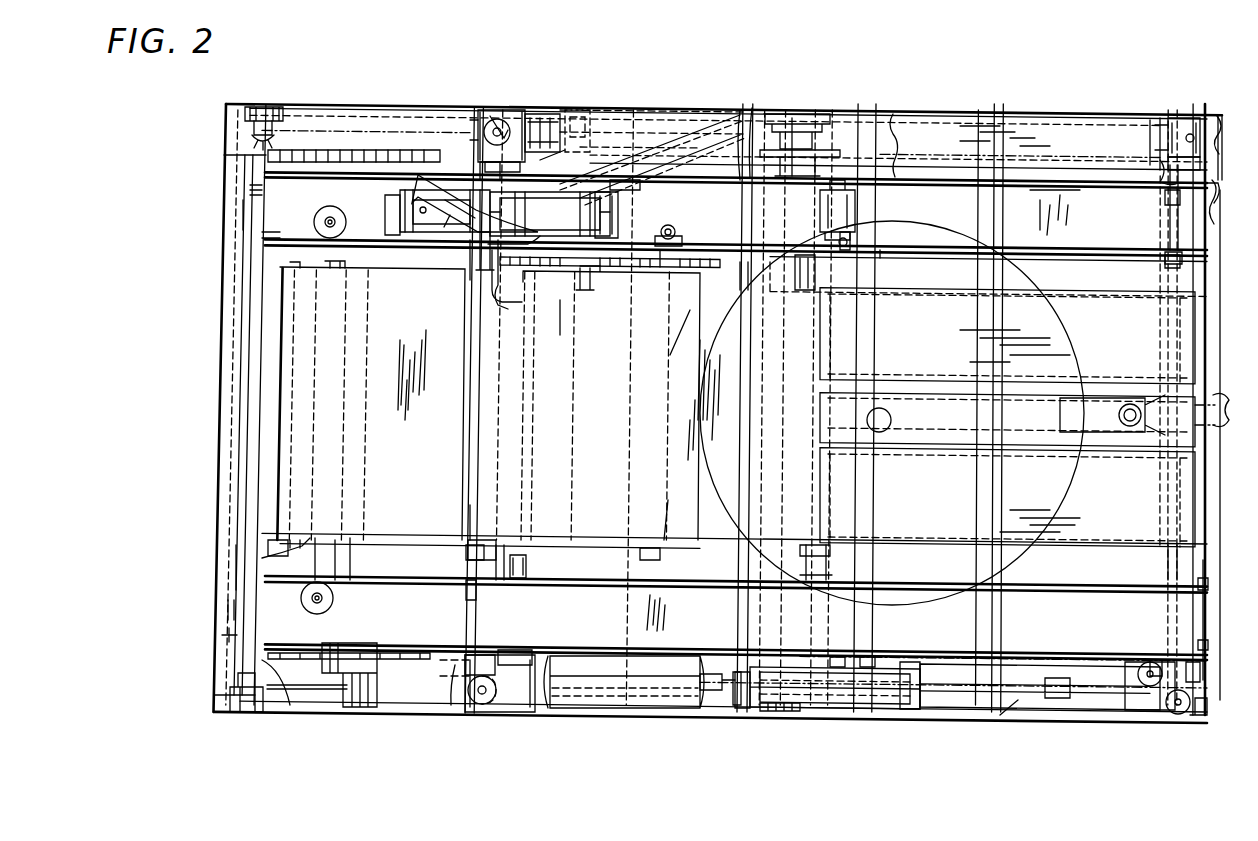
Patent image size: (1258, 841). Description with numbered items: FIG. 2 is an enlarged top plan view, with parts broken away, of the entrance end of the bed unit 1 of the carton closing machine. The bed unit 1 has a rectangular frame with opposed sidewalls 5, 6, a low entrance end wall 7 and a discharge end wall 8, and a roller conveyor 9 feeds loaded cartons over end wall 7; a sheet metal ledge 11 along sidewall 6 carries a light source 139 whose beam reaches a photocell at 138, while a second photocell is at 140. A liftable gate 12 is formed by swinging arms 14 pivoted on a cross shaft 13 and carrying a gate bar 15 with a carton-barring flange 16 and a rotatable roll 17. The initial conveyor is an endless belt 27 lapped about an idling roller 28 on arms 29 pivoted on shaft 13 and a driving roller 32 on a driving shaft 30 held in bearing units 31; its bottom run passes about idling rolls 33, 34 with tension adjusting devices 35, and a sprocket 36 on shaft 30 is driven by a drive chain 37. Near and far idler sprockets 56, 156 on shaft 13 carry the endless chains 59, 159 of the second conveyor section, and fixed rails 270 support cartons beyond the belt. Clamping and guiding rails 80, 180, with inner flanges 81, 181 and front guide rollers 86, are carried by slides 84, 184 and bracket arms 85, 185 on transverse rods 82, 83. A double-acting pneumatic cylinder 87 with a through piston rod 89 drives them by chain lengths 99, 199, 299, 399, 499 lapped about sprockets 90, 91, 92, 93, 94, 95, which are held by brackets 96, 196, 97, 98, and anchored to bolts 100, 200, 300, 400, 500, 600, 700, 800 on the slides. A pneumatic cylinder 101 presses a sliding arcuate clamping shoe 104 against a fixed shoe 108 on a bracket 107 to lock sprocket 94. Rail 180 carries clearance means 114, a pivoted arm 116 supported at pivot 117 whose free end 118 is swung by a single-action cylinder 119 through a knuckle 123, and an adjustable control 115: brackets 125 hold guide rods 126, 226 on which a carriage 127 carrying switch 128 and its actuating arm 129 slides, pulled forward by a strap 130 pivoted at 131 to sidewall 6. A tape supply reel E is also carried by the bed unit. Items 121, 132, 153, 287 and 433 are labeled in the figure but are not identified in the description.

The bed unit 1 is at (1222, 88).
The sidewall 5 is at (638, 714).
The sidewall 6 is at (650, 106).
The end wall 7 is at (228, 434).
The end wall 8 is at (212, 255).
The roller conveyor 9 is at (386, 254).
The ledge 11 is at (972, 112).
The liftable gate 12 is at (666, 256).
The cross shaft 13 is at (872, 236).
The swinging arms 14 is at (312, 132).
The gate bar 15 is at (245, 212).
The carton-barring flange 16 is at (226, 606).
The rotatable roll 17 is at (240, 566).
The initial endless conveyor section 27 is at (442, 480).
The idling roller 28 is at (278, 554).
The arms 29 is at (310, 268).
The driving shaft 30 is at (808, 574).
The bearing units 31 is at (798, 124).
The driving roller 32 is at (806, 546).
The idling roll 33 is at (574, 426).
The idling roll 34 is at (661, 498).
The tension adjusting devices 35 is at (580, 288).
The sprocket 36 is at (820, 139).
The drive chain 37 is at (891, 148).
The near idler sprocket 56 is at (316, 662).
The endless chain 59 is at (418, 665).
The clamping and guiding rail 80 is at (1136, 584).
The upstanding flange 81 is at (936, 584).
The transverse rod 82 is at (484, 570).
The transverse rod 83 is at (1174, 555).
The slide 84 is at (479, 583).
The bracket arm 85 is at (472, 688).
The carton guide roller 86 is at (322, 220).
The pneumatic cylinder 87 is at (886, 709).
The piston rod 89 is at (970, 696).
The sprocket 90 is at (1140, 658).
The sprocket 91 is at (1160, 146).
The sprocket 92 is at (1198, 730).
The sprocket 93 is at (458, 716).
The sprocket 94 is at (498, 116).
The sprocket 95 is at (542, 654).
The bracket 96 is at (1160, 718).
The bracket 97 is at (1180, 114).
The bracket 98 is at (486, 114).
The chain length 99 is at (1160, 398).
The anchor bolt 100 is at (1172, 258).
The pneumatic cylinder 101 is at (570, 112).
The arcuate clamping shoe 104 is at (530, 114).
The bracket 107 is at (615, 100).
The arcuate clamping shoe 108 is at (477, 116).
The clearance means 114 is at (716, 296).
The adjustable control 115 is at (455, 218).
The clearance arm 116 is at (740, 252).
The pivot 117 is at (678, 232).
The free end 118 is at (852, 258).
The pneumatic cylinder 119 is at (822, 208).
The shaft 121 is at (837, 99).
The knuckle 123 is at (852, 236).
The brackets 125 is at (388, 208).
The guide rod 126 is at (610, 257).
The carriage 127 is at (466, 194).
The control device 128 is at (445, 212).
The actuating arm 129 is at (464, 246).
The rigid arm or strap 130 is at (596, 188).
The pivot 131 is at (738, 118).
The top rail 132 is at (410, 86).
The photocell 138 is at (236, 728).
The light source 139 is at (262, 122).
The second photocell 140 is at (819, 719).
The bracket 153 is at (1218, 192).
The far idler sprocket 156 is at (298, 160).
The endless chain 159 is at (754, 112).
The clamping and guiding rail 180 is at (243, 190).
The upstanding flange 181 is at (970, 260).
The slide 184 is at (526, 306).
The bracket arm 185 is at (554, 154).
The bracket 196 is at (516, 716).
The chain length 199 is at (1208, 392).
The anchor bolt 200 is at (1168, 190).
The guide rod 226 is at (556, 208).
The fixed rails 270 is at (1055, 356).
The plate 287 is at (1025, 196).
The chain length 299 is at (476, 506).
The anchor bolt 300 is at (1210, 584).
The chain length 399 is at (561, 328).
The anchor bolt 400 is at (1208, 656).
The link 433 is at (534, 242).
The chain length 499 is at (650, 646).
The anchor bolt 500 is at (476, 286).
The anchor bolt 600 is at (496, 160).
The anchor bolt 700 is at (524, 569).
The anchor bolt 800 is at (505, 648).
The adhesive tape supply reel E is at (1115, 440).